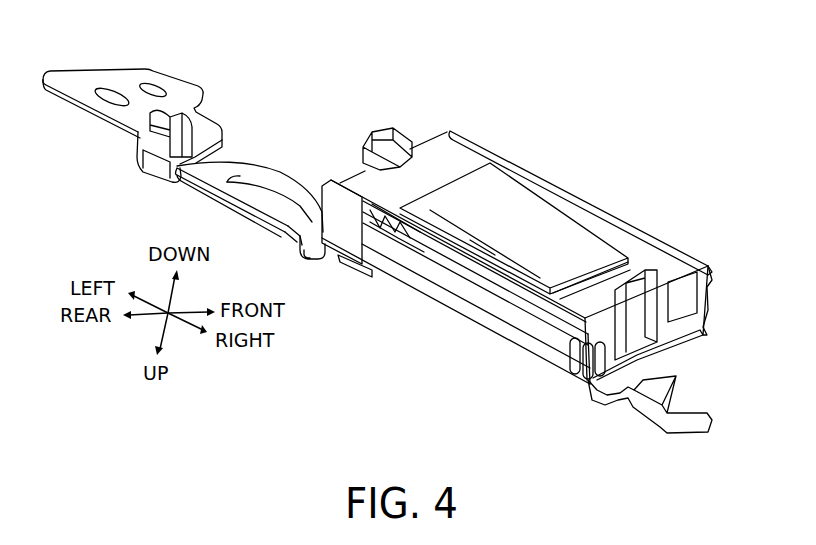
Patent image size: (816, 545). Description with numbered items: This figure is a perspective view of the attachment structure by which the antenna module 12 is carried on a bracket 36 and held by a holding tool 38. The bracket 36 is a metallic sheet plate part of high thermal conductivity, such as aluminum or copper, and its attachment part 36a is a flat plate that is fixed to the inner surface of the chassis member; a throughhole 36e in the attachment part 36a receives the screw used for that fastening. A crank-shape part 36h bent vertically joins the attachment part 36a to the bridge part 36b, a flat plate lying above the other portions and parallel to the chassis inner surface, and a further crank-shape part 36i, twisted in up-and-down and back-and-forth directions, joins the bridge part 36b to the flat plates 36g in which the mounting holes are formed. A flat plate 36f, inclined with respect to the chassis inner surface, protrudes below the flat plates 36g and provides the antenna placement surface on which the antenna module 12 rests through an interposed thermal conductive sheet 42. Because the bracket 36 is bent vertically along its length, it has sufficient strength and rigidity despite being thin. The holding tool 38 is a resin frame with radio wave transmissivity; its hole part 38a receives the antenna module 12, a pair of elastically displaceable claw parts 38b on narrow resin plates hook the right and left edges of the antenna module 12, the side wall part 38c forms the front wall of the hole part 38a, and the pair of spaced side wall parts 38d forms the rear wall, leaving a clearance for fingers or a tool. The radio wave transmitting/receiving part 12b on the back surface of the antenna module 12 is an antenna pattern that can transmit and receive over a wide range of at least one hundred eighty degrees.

The antenna module 12 is at (503, 186).
The radio wave transmitting/receiving part 12b is at (525, 210).
The bracket 36 is at (216, 86).
The attachment part 36a is at (70, 83).
The bridge part 36b is at (238, 167).
The throughhole 36e is at (107, 91).
The flat plate 36f is at (492, 275).
The flat plate 36g is at (360, 270).
The crank-shape part 36h is at (143, 150).
The crank-shape part 36i is at (320, 268).
The holding tool 38 is at (661, 229).
The hole part 38a is at (613, 227).
The claw part 38b is at (390, 150).
The side wall part 38c is at (570, 197).
The side wall part 38d is at (330, 187).
The thermal conductive sheet 42 is at (477, 233).